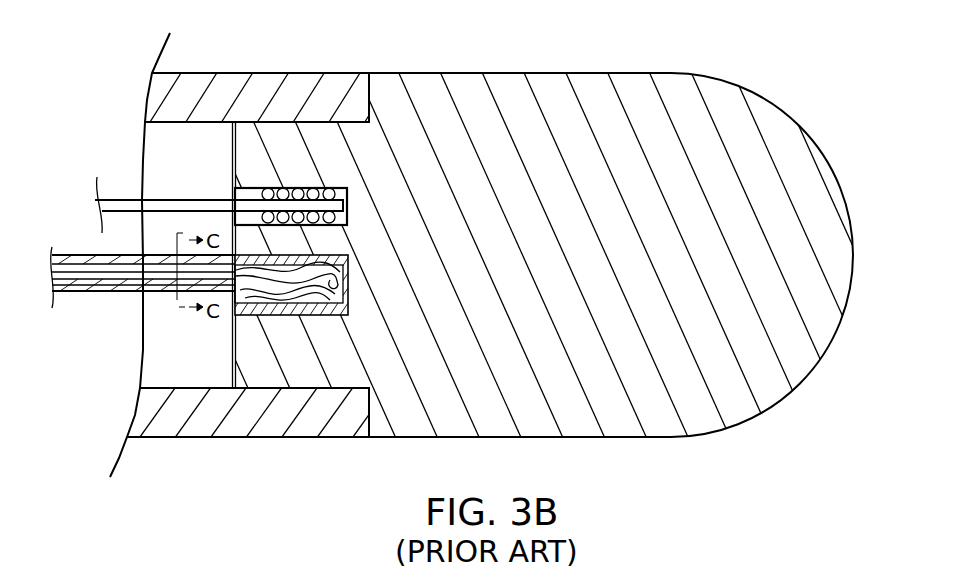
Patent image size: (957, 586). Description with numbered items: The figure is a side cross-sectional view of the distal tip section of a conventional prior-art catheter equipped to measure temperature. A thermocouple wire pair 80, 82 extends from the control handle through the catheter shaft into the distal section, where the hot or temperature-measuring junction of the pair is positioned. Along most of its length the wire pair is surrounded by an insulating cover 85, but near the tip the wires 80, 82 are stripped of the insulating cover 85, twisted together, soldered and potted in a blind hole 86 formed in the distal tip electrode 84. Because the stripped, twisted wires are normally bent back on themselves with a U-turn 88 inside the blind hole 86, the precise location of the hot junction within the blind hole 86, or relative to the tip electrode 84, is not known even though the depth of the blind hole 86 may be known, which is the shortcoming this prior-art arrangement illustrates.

The thermocouple wire 80 is at (64, 256).
The thermocouple wire 82 is at (69, 291).
The distal tip electrode 84 is at (713, 73).
The insulating cover 85 is at (121, 291).
The blind hole 86 is at (350, 278).
The U-turn 88 is at (335, 318).